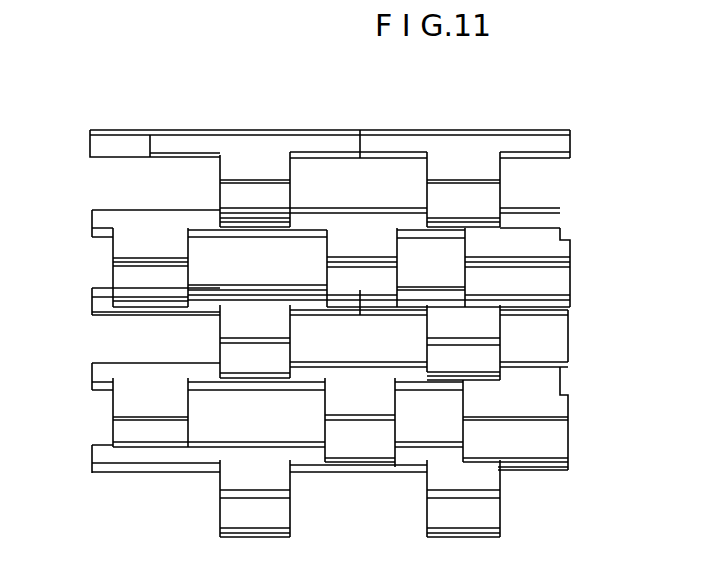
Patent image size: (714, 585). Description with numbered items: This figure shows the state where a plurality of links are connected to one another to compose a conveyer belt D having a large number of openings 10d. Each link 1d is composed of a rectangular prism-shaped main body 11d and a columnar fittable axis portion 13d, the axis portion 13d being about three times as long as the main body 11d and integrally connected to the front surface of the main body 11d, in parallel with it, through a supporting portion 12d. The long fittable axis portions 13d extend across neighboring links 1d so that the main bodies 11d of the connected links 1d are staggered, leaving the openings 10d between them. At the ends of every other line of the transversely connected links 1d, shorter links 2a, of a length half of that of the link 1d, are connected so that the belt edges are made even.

The pallet assembly D is at (207, 489).
The link 1d is at (268, 126).
The link 2a is at (574, 266).
The opening 10d is at (328, 173).
The main body 11d is at (235, 200).
The supporting portion 12d is at (127, 402).
The fittable axis portion 13d is at (350, 147).